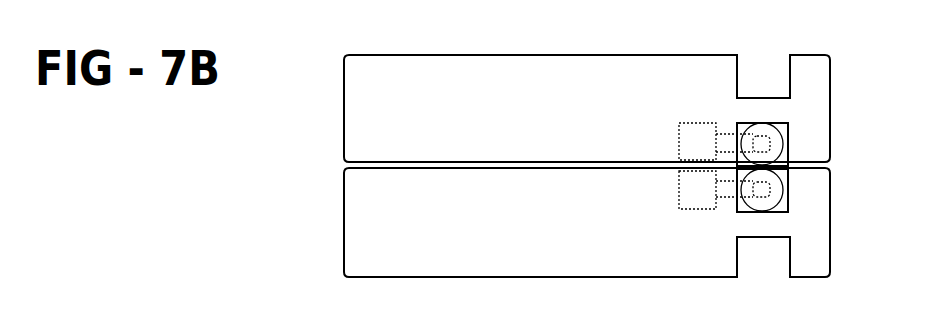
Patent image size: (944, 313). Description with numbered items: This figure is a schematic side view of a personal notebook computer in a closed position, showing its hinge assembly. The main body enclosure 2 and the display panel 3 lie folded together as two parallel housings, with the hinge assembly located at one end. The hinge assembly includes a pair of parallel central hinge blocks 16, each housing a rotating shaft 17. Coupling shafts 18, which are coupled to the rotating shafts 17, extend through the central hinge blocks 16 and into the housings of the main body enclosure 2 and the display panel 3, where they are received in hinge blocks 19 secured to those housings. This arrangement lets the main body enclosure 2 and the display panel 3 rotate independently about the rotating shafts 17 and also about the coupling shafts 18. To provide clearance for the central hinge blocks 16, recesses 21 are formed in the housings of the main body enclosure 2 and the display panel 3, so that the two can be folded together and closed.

The main body enclosure 2 is at (344, 220).
The display panel 3 is at (344, 110).
The central hinge block 16 is at (787, 193).
The rotating shaft 17 is at (764, 136).
The coupling shaft 18 is at (728, 133).
The hinge block 19 is at (675, 140).
The recess 21 is at (777, 53).